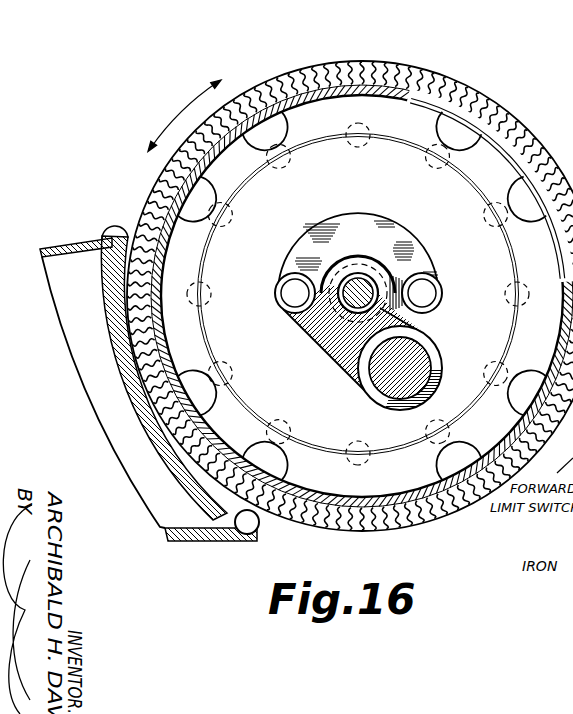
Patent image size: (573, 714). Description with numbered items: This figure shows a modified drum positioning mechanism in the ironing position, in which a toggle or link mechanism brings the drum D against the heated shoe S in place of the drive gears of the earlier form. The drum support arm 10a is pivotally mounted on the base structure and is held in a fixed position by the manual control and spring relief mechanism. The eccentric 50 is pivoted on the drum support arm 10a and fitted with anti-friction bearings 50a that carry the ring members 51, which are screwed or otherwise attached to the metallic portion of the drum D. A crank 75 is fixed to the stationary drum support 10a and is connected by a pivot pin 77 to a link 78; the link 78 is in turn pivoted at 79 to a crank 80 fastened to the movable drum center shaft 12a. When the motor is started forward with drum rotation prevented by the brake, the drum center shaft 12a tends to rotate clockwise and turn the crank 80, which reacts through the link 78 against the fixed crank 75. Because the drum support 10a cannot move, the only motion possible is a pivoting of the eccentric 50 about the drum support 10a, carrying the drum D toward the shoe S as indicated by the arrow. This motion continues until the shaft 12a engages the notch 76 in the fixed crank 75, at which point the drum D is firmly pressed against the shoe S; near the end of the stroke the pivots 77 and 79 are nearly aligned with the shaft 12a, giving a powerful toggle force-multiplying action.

The drum D is at (418, 61).
The heated shoe S is at (70, 236).
The eccentric 50 is at (492, 321).
The anti-friction bearings 50a is at (358, 133).
The ring members 51 is at (548, 345).
The crank 75 is at (342, 358).
The notch 76 is at (314, 322).
The pivot pin 77 is at (294, 296).
The link 78 is at (345, 228).
The pivot 79 is at (428, 292).
The crank 80 is at (380, 310).
The drum support arm 10a is at (398, 360).
The drum center shaft 12a is at (358, 283).